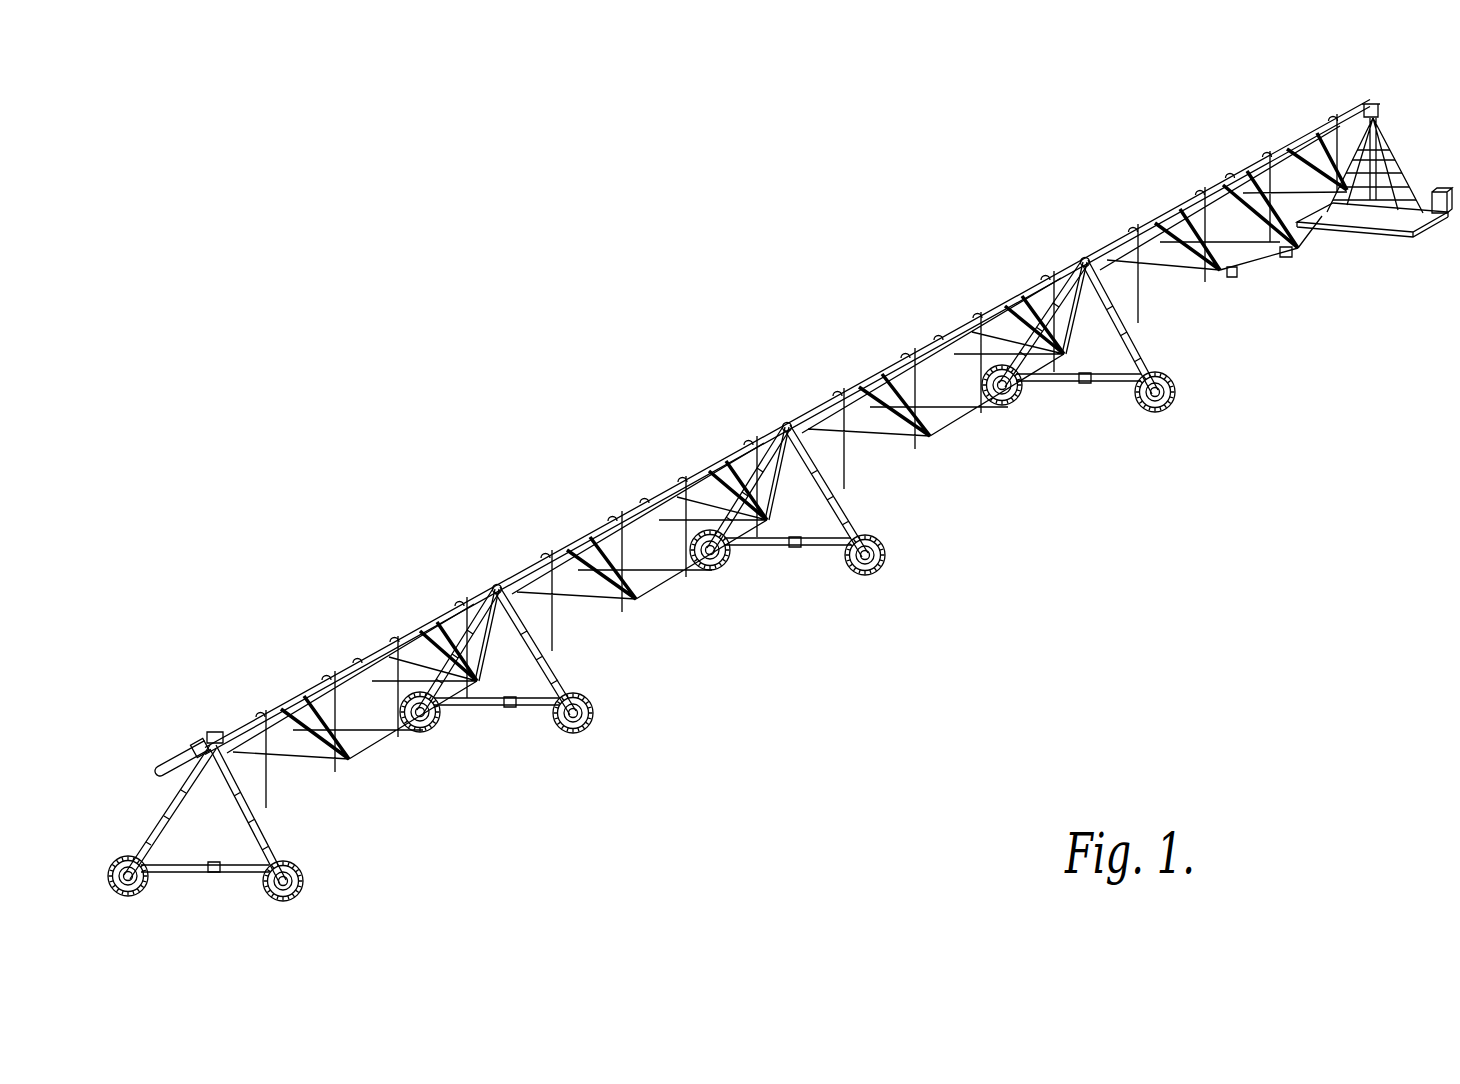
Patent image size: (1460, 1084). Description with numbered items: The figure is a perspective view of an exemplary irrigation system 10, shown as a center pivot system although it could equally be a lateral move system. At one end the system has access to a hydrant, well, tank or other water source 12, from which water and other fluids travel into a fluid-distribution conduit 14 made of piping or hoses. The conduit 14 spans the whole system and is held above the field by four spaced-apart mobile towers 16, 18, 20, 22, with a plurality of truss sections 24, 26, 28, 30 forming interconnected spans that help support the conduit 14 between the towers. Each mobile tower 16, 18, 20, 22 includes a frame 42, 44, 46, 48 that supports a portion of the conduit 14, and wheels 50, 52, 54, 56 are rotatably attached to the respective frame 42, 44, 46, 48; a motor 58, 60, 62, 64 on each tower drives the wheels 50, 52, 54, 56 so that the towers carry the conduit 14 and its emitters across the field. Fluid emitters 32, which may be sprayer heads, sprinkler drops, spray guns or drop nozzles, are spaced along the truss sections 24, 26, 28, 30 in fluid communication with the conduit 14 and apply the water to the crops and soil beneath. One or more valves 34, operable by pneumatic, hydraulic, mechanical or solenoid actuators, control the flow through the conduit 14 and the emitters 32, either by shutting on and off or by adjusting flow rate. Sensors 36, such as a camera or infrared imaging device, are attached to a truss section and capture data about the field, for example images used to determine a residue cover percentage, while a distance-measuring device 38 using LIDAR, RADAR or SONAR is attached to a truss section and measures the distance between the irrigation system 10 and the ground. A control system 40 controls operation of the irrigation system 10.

The irrigation system 10 is at (605, 290).
The water source 12 is at (1369, 144).
The fluid-distribution conduit 14 is at (1297, 135).
The mobile tower 16 is at (236, 792).
The mobile tower 18 is at (544, 627).
The mobile tower 20 is at (822, 454).
The mobile tower 22 is at (1110, 295).
The truss section 24 is at (390, 768).
The truss section 26 is at (703, 598).
The truss section 28 is at (965, 435).
The truss section 30 is at (1251, 226).
The fluid emitter 32 is at (267, 800).
The valve 34 is at (1366, 102).
The sensor 36 is at (1232, 280).
The distance-measuring device 38 is at (1288, 260).
The control system 40 is at (1440, 190).
The frame 42 is at (175, 812).
The frame 44 is at (493, 586).
The frame 46 is at (783, 424).
The frame 48 is at (1081, 260).
The wheels 50 is at (135, 893).
The wheels 52 is at (432, 722).
The wheels 54 is at (725, 555).
The wheels 56 is at (1170, 398).
The motor 58 is at (215, 874).
The motor 60 is at (512, 708).
The motor 62 is at (803, 548).
The motor 64 is at (1090, 385).